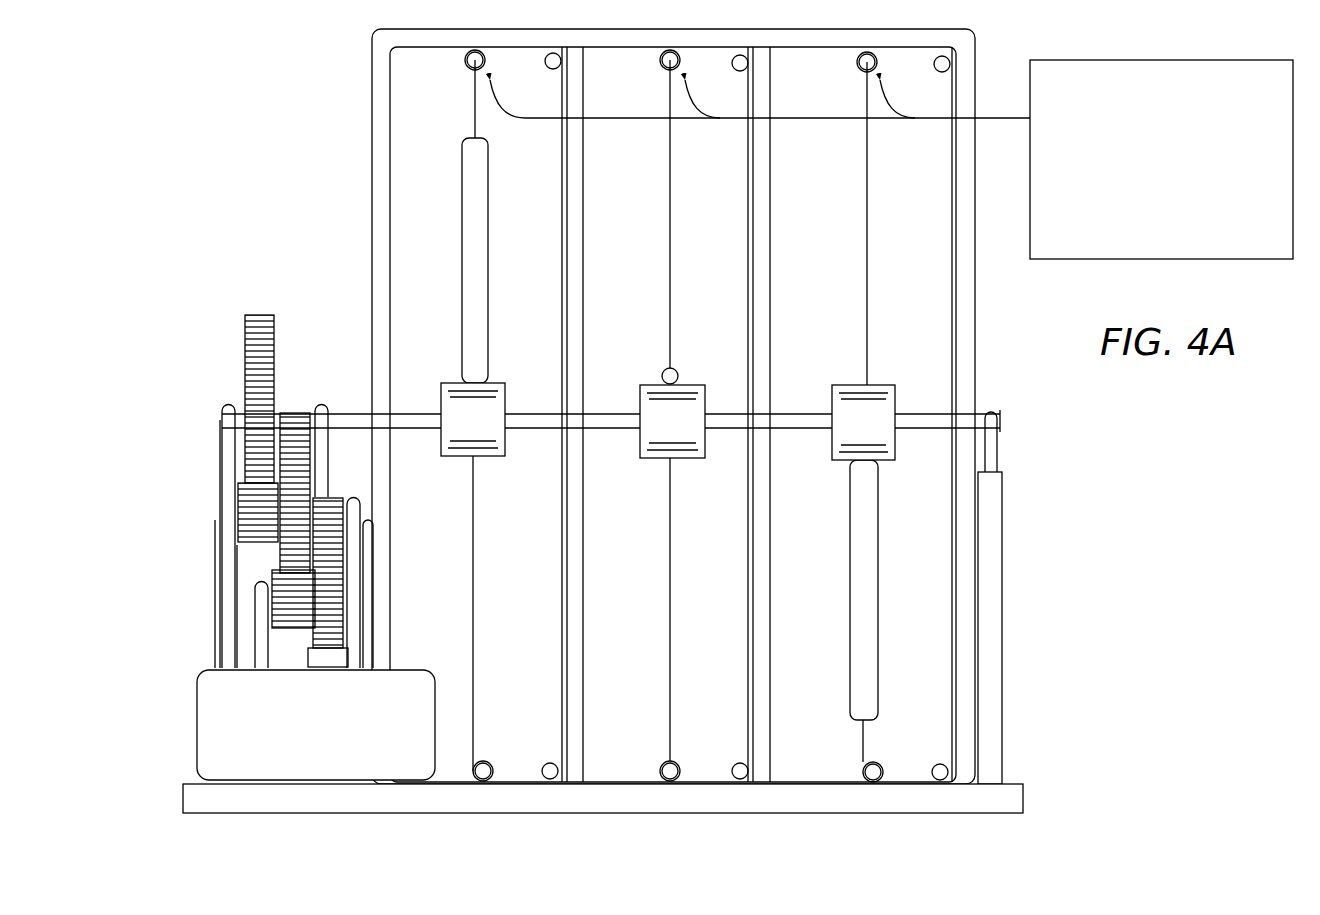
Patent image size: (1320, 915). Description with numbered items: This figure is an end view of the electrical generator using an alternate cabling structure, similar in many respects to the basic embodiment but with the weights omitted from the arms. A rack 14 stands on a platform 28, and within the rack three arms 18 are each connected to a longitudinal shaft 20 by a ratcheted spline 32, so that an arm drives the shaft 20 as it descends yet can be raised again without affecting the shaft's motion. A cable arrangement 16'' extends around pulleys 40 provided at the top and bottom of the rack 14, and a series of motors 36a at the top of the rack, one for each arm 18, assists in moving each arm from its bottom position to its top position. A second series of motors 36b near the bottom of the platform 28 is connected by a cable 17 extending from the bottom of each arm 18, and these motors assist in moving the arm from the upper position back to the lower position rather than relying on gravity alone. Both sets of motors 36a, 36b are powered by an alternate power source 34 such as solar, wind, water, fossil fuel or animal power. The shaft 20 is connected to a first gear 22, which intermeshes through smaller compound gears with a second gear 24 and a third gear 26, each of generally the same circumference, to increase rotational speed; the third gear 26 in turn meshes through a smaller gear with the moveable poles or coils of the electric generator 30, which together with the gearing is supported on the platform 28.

The rack 14 is at (372, 78).
The cable arrangement 16'' is at (729, 247).
The cable 17 is at (472, 612).
The arm 18 is at (461, 293).
The longitudinal shaft 20 is at (947, 410).
The first gear 22 is at (256, 315).
The second gear 24 is at (298, 413).
The third gear 26 is at (328, 498).
The platform 28 is at (193, 783).
The electric generator 30 is at (316, 725).
The ratcheted spline 32 is at (668, 421).
The alternate power source 34 is at (891, 159).
The motor 36a is at (465, 65).
The motor 36b is at (520, 745).
The pulley 40 is at (545, 64).